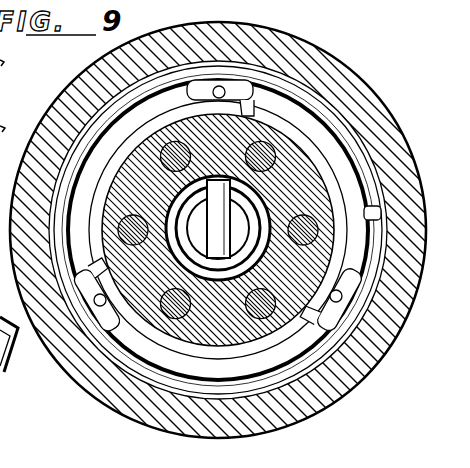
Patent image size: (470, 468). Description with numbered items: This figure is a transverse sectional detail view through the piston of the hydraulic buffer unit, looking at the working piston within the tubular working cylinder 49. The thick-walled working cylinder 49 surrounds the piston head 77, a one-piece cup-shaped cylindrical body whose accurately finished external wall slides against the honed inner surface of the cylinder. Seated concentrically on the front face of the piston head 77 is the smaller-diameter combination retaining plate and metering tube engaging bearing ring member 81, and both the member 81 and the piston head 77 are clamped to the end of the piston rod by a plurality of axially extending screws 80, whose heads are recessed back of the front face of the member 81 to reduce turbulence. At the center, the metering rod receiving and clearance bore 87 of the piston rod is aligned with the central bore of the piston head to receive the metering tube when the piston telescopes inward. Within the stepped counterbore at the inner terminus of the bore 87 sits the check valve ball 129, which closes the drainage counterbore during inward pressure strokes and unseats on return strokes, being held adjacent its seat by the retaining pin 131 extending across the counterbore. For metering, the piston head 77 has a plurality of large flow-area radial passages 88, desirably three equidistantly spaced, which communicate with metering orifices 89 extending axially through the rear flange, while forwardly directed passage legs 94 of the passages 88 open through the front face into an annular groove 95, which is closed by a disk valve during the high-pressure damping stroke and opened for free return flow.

The working cylinder 49 is at (313, 55).
The piston head 77 is at (334, 110).
The radial passages 88 is at (330, 257).
The retaining plate and metering tube engaging bearing ring member 81 is at (308, 171).
The metering rod receiving and clearance bore 87 is at (297, 188).
The screws 80 is at (274, 151).
The retaining pin 131 is at (236, 262).
The ball 129 is at (197, 262).
The passage legs 94 is at (250, 99).
The metering orifices 89 is at (221, 88).
The annular groove 95 is at (372, 212).